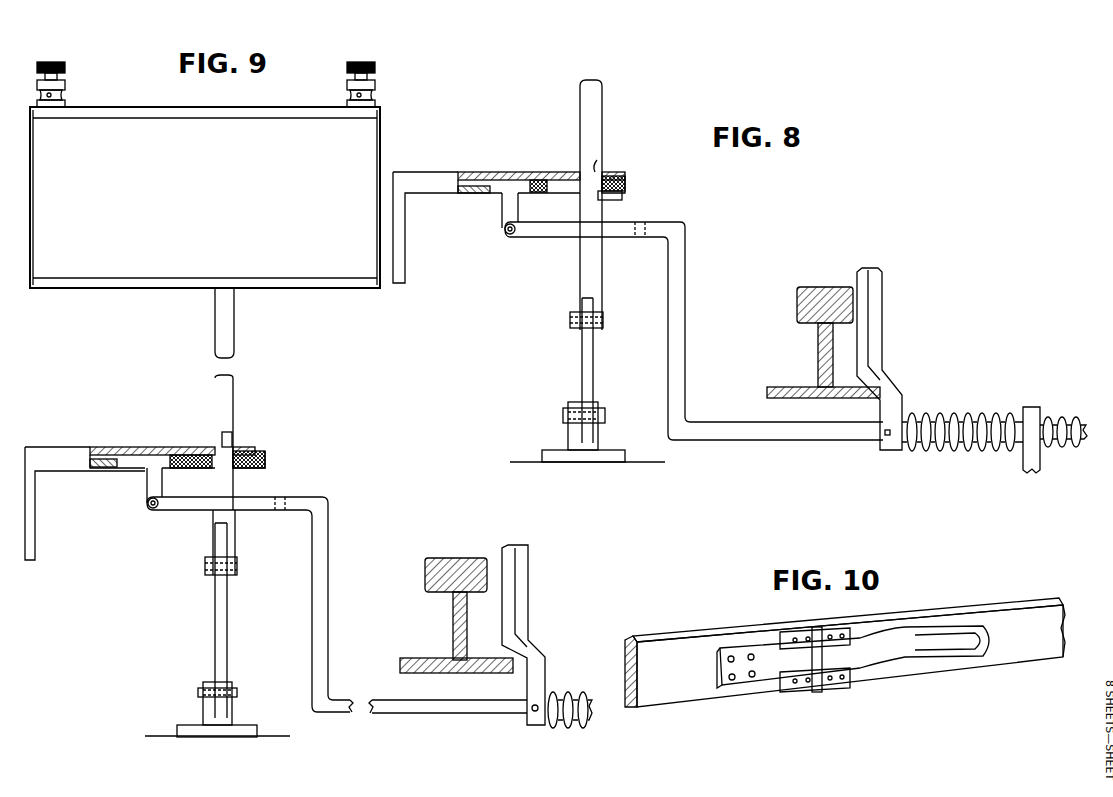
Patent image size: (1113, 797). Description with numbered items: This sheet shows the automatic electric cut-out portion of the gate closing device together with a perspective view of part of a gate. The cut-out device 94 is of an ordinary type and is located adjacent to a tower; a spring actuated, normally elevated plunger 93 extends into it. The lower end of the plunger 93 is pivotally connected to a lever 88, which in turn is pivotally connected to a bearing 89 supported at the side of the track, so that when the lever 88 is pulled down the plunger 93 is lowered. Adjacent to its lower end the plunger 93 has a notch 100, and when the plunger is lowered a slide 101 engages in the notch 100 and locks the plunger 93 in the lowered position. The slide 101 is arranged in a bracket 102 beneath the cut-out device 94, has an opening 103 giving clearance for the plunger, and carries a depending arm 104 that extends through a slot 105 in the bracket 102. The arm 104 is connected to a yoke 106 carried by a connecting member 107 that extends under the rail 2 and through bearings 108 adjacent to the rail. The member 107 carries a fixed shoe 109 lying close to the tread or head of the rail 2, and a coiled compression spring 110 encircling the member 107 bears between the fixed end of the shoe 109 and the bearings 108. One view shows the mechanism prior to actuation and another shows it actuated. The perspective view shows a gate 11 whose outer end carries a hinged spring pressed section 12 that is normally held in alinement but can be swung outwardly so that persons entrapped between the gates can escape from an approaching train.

In FIG. 9, the rail 2 is at (443, 572).
In FIG. 8, the rail 2 is at (815, 285).
In FIG. 10, the gate 11 is at (845, 652).
In FIG. 10, the hinged spring pressed section 12 is at (877, 659).
In FIG. 9, the lever 88 is at (221, 618).
In FIG. 8, the lever 88 is at (582, 348).
In FIG. 9, the bearing 89 is at (203, 692).
In FIG. 8, the bearing 89 is at (566, 413).
In FIG. 9, the plunger 93 is at (225, 395).
In FIG. 8, the plunger 93 is at (602, 103).
In FIG. 9, the cut-out device 94 is at (205, 175).
In FIG. 9, the notch 100 is at (232, 440).
In FIG. 8, the notch 100 is at (600, 172).
In FIG. 9, the slide 101 is at (267, 461).
In FIG. 8, the slide 101 is at (627, 185).
In FIG. 9, the bracket 102 is at (58, 447).
In FIG. 8, the bracket 102 is at (478, 163).
In FIG. 9, the opening 103 is at (205, 455).
In FIG. 8, the opening 103 is at (538, 186).
In FIG. 9, the depending arm 104 is at (147, 503).
In FIG. 8, the depending arm 104 is at (502, 218).
In FIG. 9, the slot 105 is at (125, 468).
In FIG. 8, the slot 105 is at (497, 193).
In FIG. 9, the yoke 106 is at (186, 512).
In FIG. 8, the yoke 106 is at (560, 238).
In FIG. 9, the connecting member 107 is at (322, 547).
In FIG. 8, the connecting member 107 is at (680, 289).
In FIG. 8, the bearings 108 is at (1043, 398).
In FIG. 9, the fixed shoe 109 is at (522, 632).
In FIG. 8, the fixed shoe 109 is at (880, 348).
In FIG. 9, the coiled compression spring 110 is at (572, 700).
In FIG. 8, the coiled compression spring 110 is at (955, 415).